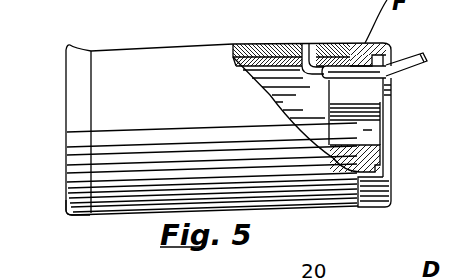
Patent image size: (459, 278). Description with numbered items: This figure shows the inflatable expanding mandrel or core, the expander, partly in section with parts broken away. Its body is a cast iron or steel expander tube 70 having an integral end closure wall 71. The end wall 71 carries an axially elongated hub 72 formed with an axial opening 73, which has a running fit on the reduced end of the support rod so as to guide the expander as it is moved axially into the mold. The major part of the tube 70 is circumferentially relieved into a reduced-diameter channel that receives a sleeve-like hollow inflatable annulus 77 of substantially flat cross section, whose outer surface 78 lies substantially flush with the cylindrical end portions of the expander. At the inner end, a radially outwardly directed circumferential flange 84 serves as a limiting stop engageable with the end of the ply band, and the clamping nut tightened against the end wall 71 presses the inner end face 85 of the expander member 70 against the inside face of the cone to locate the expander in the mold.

The expander tube 70 is at (263, 67).
The end closure wall 71 is at (383, 91).
The axially elongated hub 72 is at (330, 98).
The axial opening 73 is at (371, 144).
The inflatable annulus 77 is at (244, 46).
The outer surface of the annulus 78 is at (167, 48).
The circumferential flange 84 is at (72, 217).
The inner end face 85 is at (65, 59).